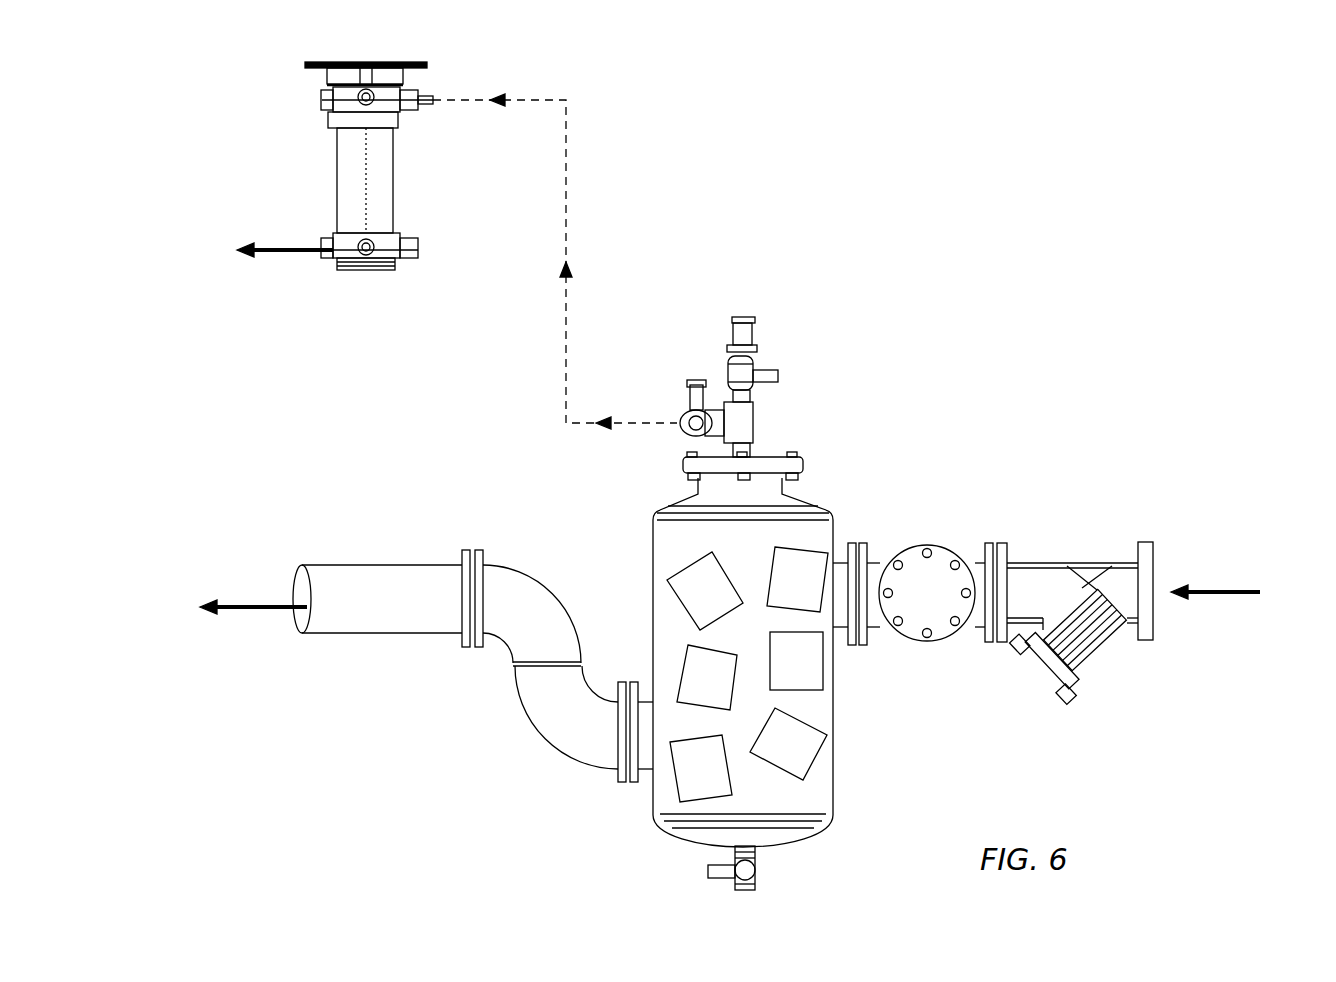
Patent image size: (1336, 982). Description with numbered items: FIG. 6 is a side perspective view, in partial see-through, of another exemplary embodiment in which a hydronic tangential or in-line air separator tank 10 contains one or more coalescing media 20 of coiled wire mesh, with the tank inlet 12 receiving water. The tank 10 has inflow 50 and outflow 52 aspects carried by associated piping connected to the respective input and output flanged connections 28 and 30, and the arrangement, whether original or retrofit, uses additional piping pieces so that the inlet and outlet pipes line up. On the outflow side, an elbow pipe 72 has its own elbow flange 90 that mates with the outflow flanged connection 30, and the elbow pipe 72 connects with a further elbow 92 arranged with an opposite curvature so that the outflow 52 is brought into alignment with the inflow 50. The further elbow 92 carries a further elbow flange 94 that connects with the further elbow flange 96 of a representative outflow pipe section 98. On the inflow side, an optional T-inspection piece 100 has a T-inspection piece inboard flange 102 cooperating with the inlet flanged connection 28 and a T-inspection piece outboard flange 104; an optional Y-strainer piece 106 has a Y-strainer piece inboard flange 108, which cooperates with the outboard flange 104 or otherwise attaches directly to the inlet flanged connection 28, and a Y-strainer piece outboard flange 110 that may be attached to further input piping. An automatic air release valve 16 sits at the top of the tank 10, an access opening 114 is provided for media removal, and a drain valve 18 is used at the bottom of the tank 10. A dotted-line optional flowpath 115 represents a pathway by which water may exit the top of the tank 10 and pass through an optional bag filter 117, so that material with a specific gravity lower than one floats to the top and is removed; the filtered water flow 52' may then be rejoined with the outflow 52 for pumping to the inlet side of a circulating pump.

The hydronic tangential or in-line air separator tank 10 is at (852, 797).
The inlet 12 is at (680, 418).
The air release valve 16 is at (757, 333).
The drain valve 18 is at (797, 872).
The coalescing media 20 is at (682, 572).
The inlet flanged connection 28 is at (852, 543).
The outlet flanged connection 30 is at (632, 786).
The flow into tank 50 is at (1213, 585).
The flow out of tank 52 is at (253, 571).
The water flow 52' is at (285, 275).
The elbow pipe 72 is at (535, 733).
The elbow flange 90 is at (612, 786).
The further elbow 92 is at (495, 648).
The further elbow flange 94 is at (481, 550).
The further elbow flange 96 is at (466, 550).
The outflow pipe section 98 is at (378, 562).
The T-inspection piece 100 is at (932, 545).
The T-inspection piece inboard flange 102 is at (878, 545).
The T-inspection piece outboard flange 104 is at (988, 545).
The Y-strainer piece 106 is at (1108, 706).
The Y-strainer piece inboard flange 108 is at (1003, 545).
The Y-strainer piece outboard flange 110 is at (1142, 540).
The access opening 114 is at (760, 447).
The optional flowpath 115 is at (566, 183).
The optional bag filter 117 is at (404, 132).